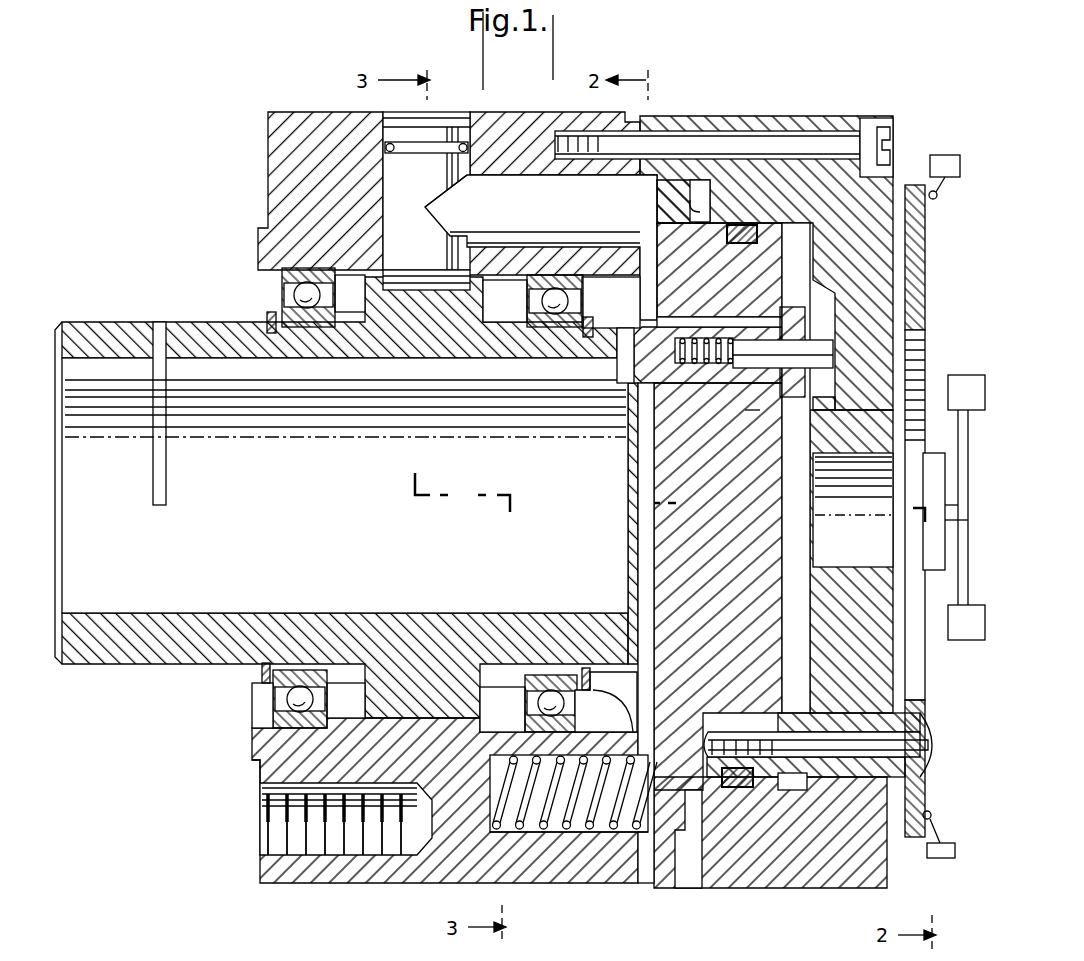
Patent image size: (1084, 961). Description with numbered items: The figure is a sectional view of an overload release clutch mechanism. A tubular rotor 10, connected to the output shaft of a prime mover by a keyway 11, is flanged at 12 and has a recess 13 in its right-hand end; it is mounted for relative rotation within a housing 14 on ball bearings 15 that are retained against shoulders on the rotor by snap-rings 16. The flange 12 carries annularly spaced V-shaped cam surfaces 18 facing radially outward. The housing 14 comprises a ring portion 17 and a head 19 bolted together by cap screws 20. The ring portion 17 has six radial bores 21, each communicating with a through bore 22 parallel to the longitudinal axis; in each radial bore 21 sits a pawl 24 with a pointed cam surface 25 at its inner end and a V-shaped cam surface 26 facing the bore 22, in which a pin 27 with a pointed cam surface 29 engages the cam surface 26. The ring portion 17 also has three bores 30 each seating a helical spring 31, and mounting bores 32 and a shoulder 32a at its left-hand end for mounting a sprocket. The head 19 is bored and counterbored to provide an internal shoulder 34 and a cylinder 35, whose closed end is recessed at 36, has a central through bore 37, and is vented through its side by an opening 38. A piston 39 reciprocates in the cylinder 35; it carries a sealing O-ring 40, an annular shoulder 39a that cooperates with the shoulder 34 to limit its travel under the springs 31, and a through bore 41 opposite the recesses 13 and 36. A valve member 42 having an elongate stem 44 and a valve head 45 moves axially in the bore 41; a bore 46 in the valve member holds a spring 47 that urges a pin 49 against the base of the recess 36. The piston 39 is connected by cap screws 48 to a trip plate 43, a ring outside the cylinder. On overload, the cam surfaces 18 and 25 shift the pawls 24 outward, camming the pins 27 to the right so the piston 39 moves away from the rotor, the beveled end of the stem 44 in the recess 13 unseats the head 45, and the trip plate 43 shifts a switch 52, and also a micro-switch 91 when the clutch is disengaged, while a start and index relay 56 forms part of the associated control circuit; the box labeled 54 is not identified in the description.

The tubular rotor 10 is at (136, 673).
The keyway 11 is at (252, 375).
The flange 12 is at (425, 330).
The recess 13 is at (628, 336).
The housing 14 is at (541, 108).
The ball bearings 15 is at (275, 705).
The snap-rings 16 is at (262, 673).
The ring portion 17 is at (300, 122).
The V-shaped notches or cam surfaces 18 is at (476, 300).
The head 19 is at (895, 188).
The cap screws 20 is at (872, 130).
The radial bores 21 is at (458, 125).
The through bores 22 is at (522, 178).
The pawl 24 is at (426, 191).
The pointed cam surface 25 is at (405, 292).
The V-shaped notch or cam surface 26 is at (432, 205).
The pin 27 is at (541, 247).
The pointed cam surface 29 is at (455, 233).
The bores 30 is at (530, 830).
The helical spring 31 is at (612, 830).
The mounting bores 32 is at (266, 822).
The shoulder 32a is at (258, 768).
The internal shoulder 34 is at (712, 193).
The cylinder 35 is at (790, 493).
The recess 36 is at (828, 308).
The central through bore 37 is at (895, 455).
The opening 38 is at (690, 888).
The piston 39 is at (695, 558).
The annular shoulder 39a is at (693, 207).
The sealing O-ring 40 is at (740, 790).
The through bore 41 is at (690, 332).
The valve member 42 is at (690, 367).
The trip plate 43 is at (912, 640).
The elongate stem 44 is at (750, 413).
The valve head 45 is at (832, 384).
The bore 46 is at (792, 320).
The spring 47 is at (725, 348).
The cap screws 48 is at (930, 758).
The pin 49 is at (762, 375).
The switch 52 is at (948, 152).
The controller 54 is at (965, 490).
The start and index relay 56 is at (966, 622).
The micro-switch 91 is at (927, 860).